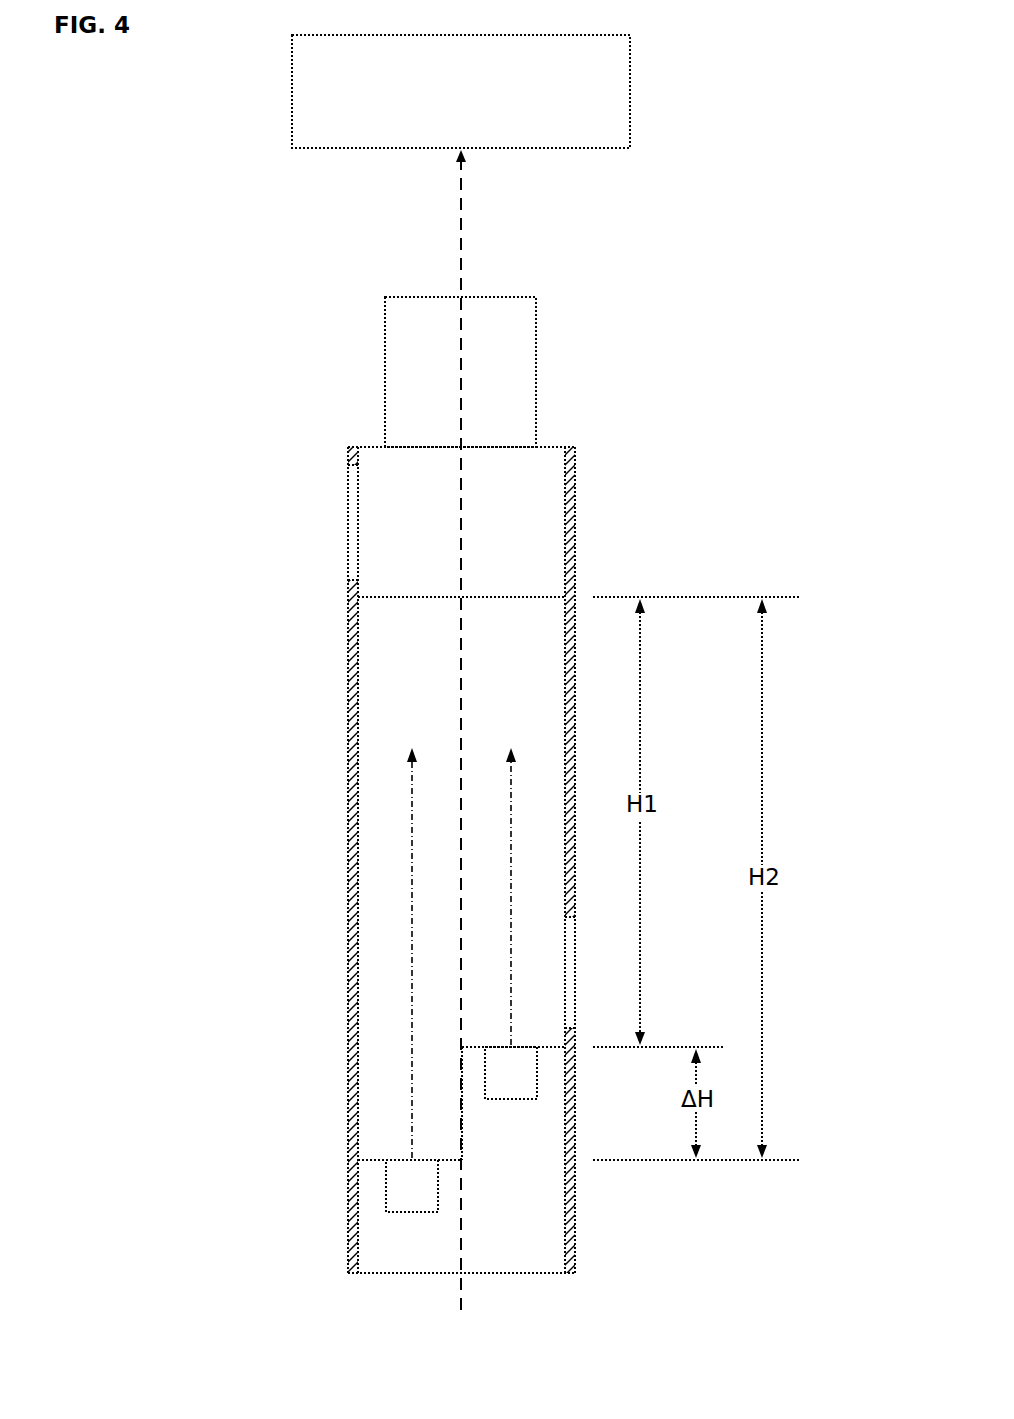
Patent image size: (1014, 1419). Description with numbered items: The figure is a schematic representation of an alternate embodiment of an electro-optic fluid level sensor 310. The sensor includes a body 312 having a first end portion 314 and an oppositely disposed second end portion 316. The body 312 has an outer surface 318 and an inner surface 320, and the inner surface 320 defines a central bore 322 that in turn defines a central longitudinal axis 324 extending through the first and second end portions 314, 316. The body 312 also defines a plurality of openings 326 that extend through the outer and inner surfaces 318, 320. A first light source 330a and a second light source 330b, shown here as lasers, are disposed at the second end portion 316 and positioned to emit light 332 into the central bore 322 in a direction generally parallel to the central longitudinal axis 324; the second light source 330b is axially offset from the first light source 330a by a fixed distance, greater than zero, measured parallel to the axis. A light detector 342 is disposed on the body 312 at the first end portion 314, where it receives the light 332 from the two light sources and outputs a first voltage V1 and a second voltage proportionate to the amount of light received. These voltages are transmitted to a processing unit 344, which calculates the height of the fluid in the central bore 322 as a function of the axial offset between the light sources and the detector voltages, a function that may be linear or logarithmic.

The electro-optic fluid level sensor 310 is at (838, 362).
The body 312 is at (265, 615).
The first end portion 314 is at (576, 472).
The second end portion 316 is at (576, 1223).
The outer surface 318 is at (348, 786).
The inner surface 320 is at (565, 540).
The central bore 322 is at (387, 952).
The central longitudinal axis 324 is at (463, 335).
The opening 326 is at (348, 484).
The first light source 330a is at (537, 1074).
The second light source 330b is at (387, 1186).
The light 332 is at (413, 855).
The light detector 342 is at (540, 360).
The processing unit 344 is at (632, 92).
The first voltage V1 is at (462, 217).